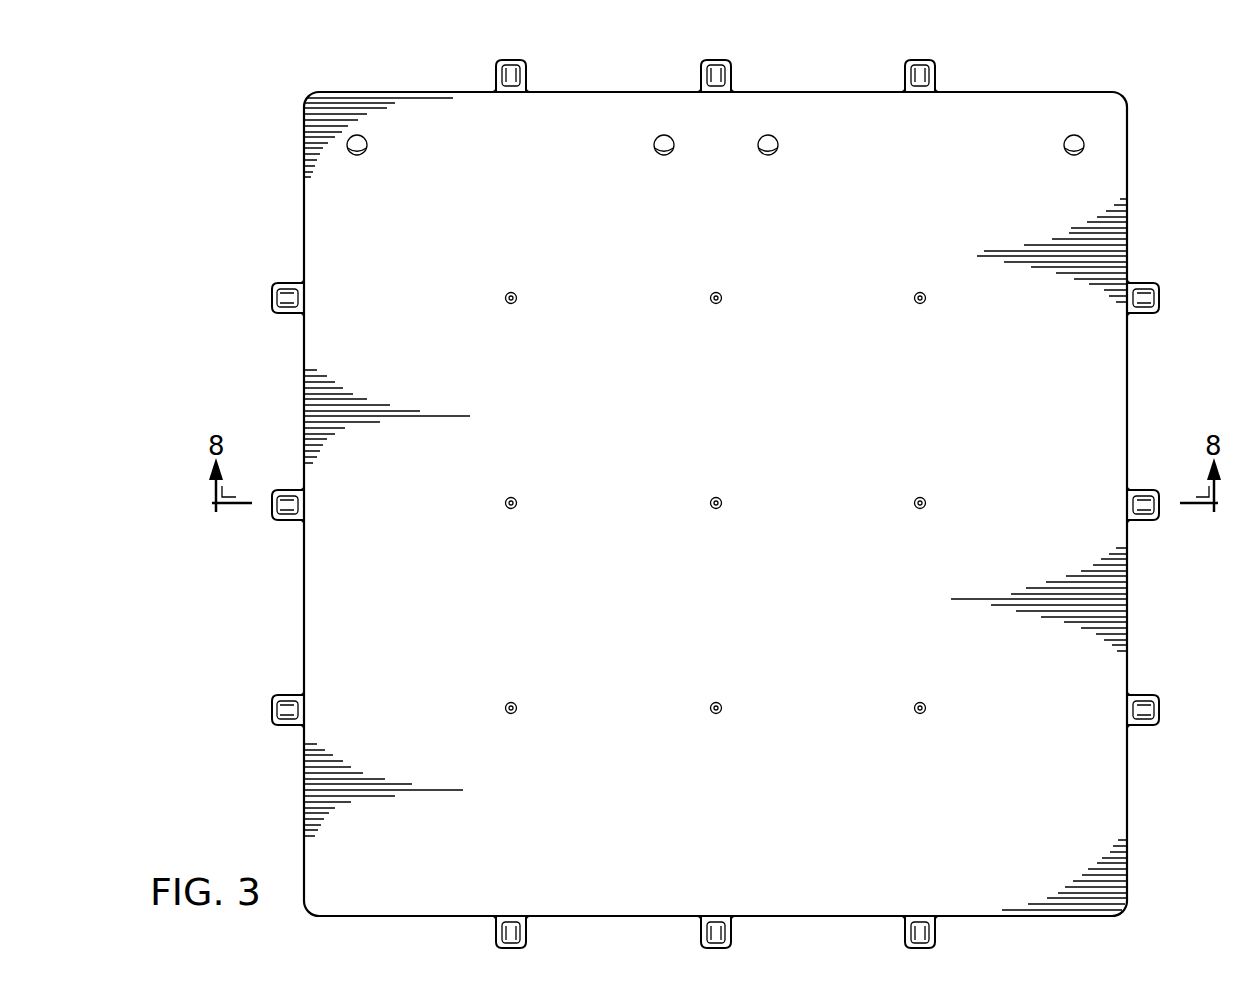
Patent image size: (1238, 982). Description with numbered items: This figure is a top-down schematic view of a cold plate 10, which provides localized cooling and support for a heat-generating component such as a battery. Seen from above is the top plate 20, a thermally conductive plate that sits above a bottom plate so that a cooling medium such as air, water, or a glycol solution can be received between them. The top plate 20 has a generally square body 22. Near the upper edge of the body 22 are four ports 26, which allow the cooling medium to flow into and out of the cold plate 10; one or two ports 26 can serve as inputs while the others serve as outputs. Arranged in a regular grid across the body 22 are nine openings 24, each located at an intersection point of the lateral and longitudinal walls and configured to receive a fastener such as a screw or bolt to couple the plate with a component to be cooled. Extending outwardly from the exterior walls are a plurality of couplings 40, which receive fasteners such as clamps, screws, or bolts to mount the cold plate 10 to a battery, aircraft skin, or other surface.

The cold plate 10 is at (216, 118).
The top plate 20 is at (1024, 86).
The body 22 is at (834, 420).
The opening 24 is at (921, 498).
The port 26 is at (366, 151).
The coupling 40 is at (497, 74).